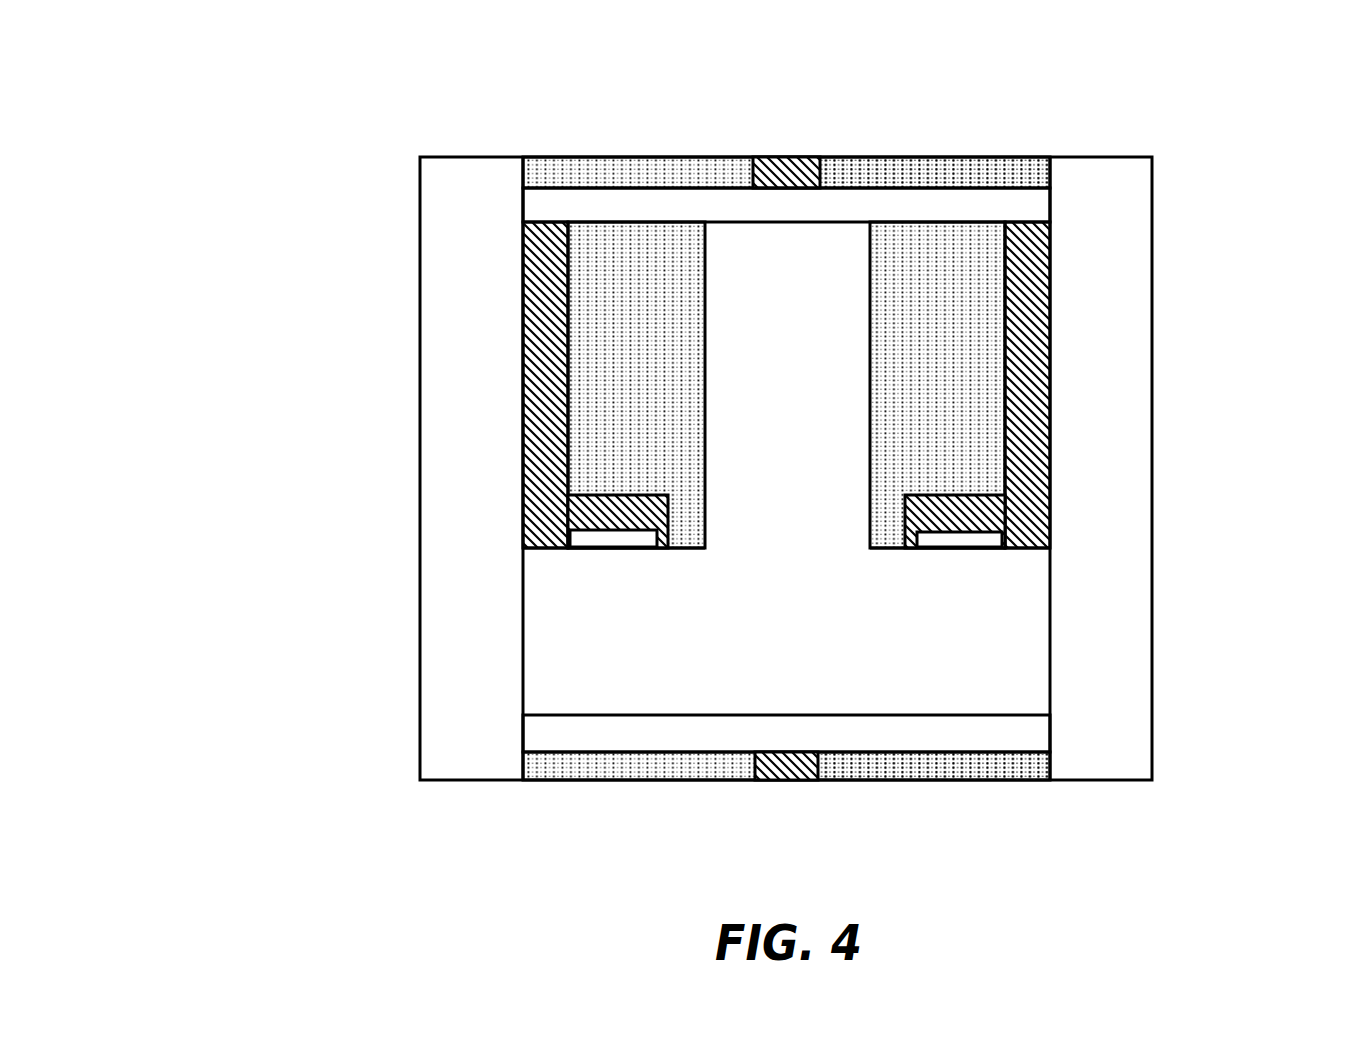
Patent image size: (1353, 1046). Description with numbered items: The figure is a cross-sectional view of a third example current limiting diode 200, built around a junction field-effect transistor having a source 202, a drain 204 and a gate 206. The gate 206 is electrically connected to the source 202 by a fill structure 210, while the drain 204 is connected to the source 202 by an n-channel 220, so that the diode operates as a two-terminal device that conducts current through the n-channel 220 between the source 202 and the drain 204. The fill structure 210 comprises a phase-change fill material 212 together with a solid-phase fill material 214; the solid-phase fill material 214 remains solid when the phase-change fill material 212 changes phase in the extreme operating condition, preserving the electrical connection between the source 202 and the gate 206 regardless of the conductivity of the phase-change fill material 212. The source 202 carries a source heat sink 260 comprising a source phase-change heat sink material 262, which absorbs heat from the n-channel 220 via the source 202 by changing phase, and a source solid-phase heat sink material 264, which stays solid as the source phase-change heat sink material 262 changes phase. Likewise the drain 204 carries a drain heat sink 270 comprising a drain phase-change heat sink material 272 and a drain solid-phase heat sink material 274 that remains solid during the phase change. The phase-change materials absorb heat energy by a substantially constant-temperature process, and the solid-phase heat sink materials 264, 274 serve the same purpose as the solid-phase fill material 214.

The current limiting diode 200 is at (90, 76).
The source 202 is at (698, 207).
The drain 204 is at (742, 733).
The gate 206 is at (582, 542).
The fill structure 210 is at (522, 317).
The phase-change fill material 212 is at (664, 258).
The solid-phase fill material 214 is at (1030, 387).
The n-channel 220 is at (826, 180).
The source heat sink 260 is at (887, 116).
The source phase-change heat sink material 262 is at (972, 177).
The source solid-phase heat sink material 264 is at (803, 240).
The drain heat sink 270 is at (865, 832).
The drain phase-change heat sink material 272 is at (907, 763).
The drain solid-phase heat sink material 274 is at (790, 782).